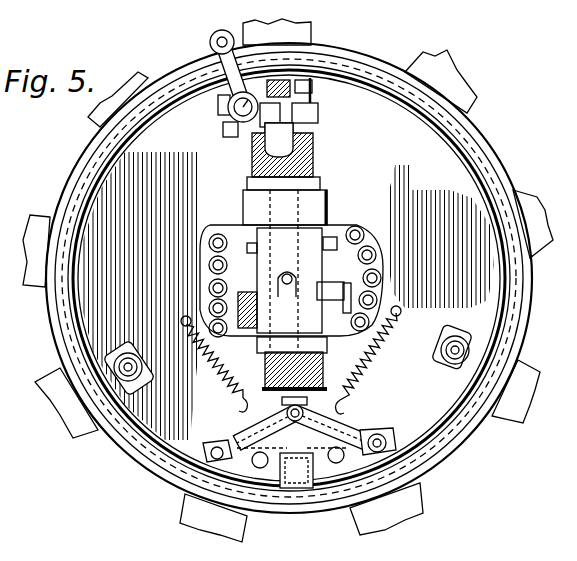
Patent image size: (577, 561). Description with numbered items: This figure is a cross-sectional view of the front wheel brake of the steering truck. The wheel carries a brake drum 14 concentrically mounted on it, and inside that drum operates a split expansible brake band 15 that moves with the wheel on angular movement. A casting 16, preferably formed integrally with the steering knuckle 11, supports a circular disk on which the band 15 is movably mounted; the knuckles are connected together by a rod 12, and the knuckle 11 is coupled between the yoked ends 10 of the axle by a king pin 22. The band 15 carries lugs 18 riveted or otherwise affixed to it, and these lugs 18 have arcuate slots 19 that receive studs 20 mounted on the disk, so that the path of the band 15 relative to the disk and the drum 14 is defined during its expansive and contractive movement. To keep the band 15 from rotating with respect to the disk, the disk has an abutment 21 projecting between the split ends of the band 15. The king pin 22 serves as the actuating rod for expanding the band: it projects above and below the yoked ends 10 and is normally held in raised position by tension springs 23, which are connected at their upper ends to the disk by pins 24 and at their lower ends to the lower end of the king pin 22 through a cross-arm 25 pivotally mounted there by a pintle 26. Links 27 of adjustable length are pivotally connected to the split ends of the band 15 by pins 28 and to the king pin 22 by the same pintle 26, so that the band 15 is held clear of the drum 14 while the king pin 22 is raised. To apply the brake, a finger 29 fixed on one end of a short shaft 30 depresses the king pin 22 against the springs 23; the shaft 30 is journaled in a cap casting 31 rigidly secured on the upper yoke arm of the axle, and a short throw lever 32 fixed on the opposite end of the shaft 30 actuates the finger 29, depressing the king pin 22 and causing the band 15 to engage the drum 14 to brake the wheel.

The yoked ends 10 is at (315, 152).
The steering knuckle 11 is at (265, 268).
The rod 12 is at (387, 110).
The brake drum 14 is at (467, 128).
The brake band 15 is at (462, 165).
The casting 16 is at (352, 255).
The lugs 18 is at (140, 390).
The arcuate slots 19 is at (143, 385).
The studs 20 is at (447, 350).
The abutment 21 is at (298, 490).
The king pin 22 is at (307, 403).
The tension springs 23 is at (218, 367).
The pins 24 is at (186, 316).
The cross-arm 25 is at (336, 407).
The pintle 26 is at (247, 408).
The links 27 is at (347, 453).
The pins 28 is at (387, 435).
The finger 29 is at (313, 97).
The short shaft 30 is at (228, 110).
The cap casting 31 is at (251, 142).
The short throw lever 32 is at (210, 44).